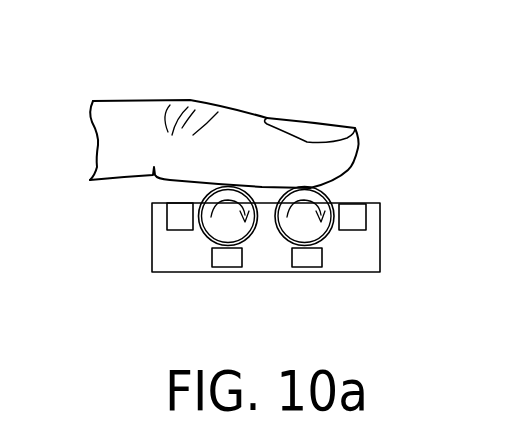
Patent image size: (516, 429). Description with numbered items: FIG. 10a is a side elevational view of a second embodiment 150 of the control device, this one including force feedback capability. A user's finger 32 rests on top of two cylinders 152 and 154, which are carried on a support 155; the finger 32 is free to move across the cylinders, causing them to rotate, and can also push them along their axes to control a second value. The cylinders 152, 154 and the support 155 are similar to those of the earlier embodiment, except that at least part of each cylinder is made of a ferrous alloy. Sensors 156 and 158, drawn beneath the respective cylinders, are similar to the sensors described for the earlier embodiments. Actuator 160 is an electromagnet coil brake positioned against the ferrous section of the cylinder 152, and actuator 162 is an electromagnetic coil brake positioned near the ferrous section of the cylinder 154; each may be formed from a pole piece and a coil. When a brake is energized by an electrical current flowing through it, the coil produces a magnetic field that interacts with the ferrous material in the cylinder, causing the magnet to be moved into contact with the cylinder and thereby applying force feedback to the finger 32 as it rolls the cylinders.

The finger 32 is at (243, 127).
The second embodiment 150 is at (372, 94).
The cylinder 152 is at (210, 233).
The cylinder 154 is at (322, 233).
The support 155 is at (178, 273).
The sensor 156 is at (227, 262).
The sensor 158 is at (307, 262).
The actuator 160 is at (172, 217).
The actuator 162 is at (352, 211).